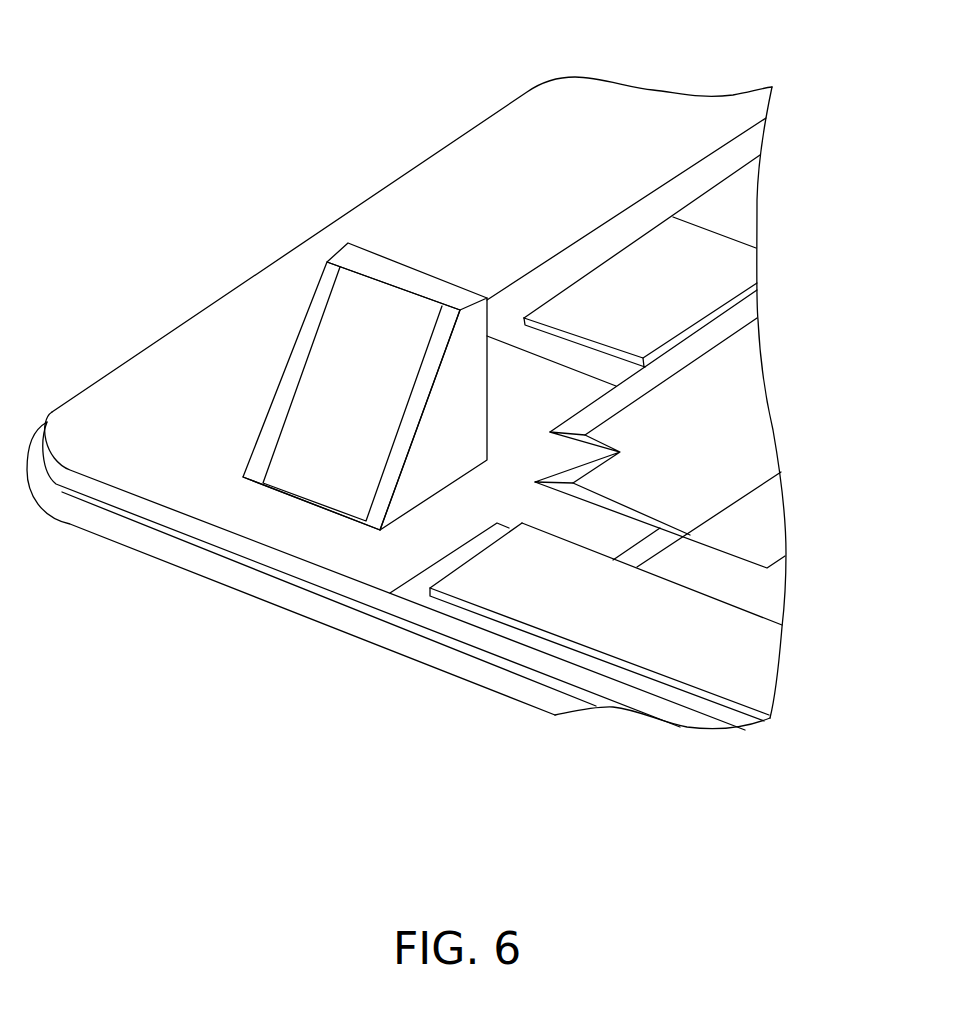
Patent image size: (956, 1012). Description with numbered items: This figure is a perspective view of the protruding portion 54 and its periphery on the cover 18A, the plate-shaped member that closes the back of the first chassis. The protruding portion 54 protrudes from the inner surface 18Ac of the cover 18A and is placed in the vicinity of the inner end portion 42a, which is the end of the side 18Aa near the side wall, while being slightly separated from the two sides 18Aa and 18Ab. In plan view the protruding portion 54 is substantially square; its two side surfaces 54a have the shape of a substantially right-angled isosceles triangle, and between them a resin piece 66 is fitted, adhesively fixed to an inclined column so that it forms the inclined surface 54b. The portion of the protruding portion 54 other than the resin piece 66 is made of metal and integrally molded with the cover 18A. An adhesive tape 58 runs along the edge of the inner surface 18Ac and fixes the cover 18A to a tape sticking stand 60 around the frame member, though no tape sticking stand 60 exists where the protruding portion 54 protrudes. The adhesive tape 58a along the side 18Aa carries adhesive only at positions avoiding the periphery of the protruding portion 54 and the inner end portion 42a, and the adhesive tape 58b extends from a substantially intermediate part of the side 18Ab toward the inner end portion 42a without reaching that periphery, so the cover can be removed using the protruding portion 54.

The cover 18A is at (480, 67).
The side 18Aa is at (445, 148).
The side 18Ab is at (430, 640).
The inner surface 18Ac is at (750, 384).
The inner end portion 42a is at (82, 434).
The protruding portion 54 is at (333, 246).
The side surface 54a is at (430, 467).
The inclined surface 54b is at (352, 394).
The resin piece 66 is at (380, 352).
The adhesive tape 58 is at (606, 395).
The adhesive tape 58a is at (728, 197).
The adhesive tape 58b is at (528, 602).
The tape sticking stand 60 is at (615, 112).